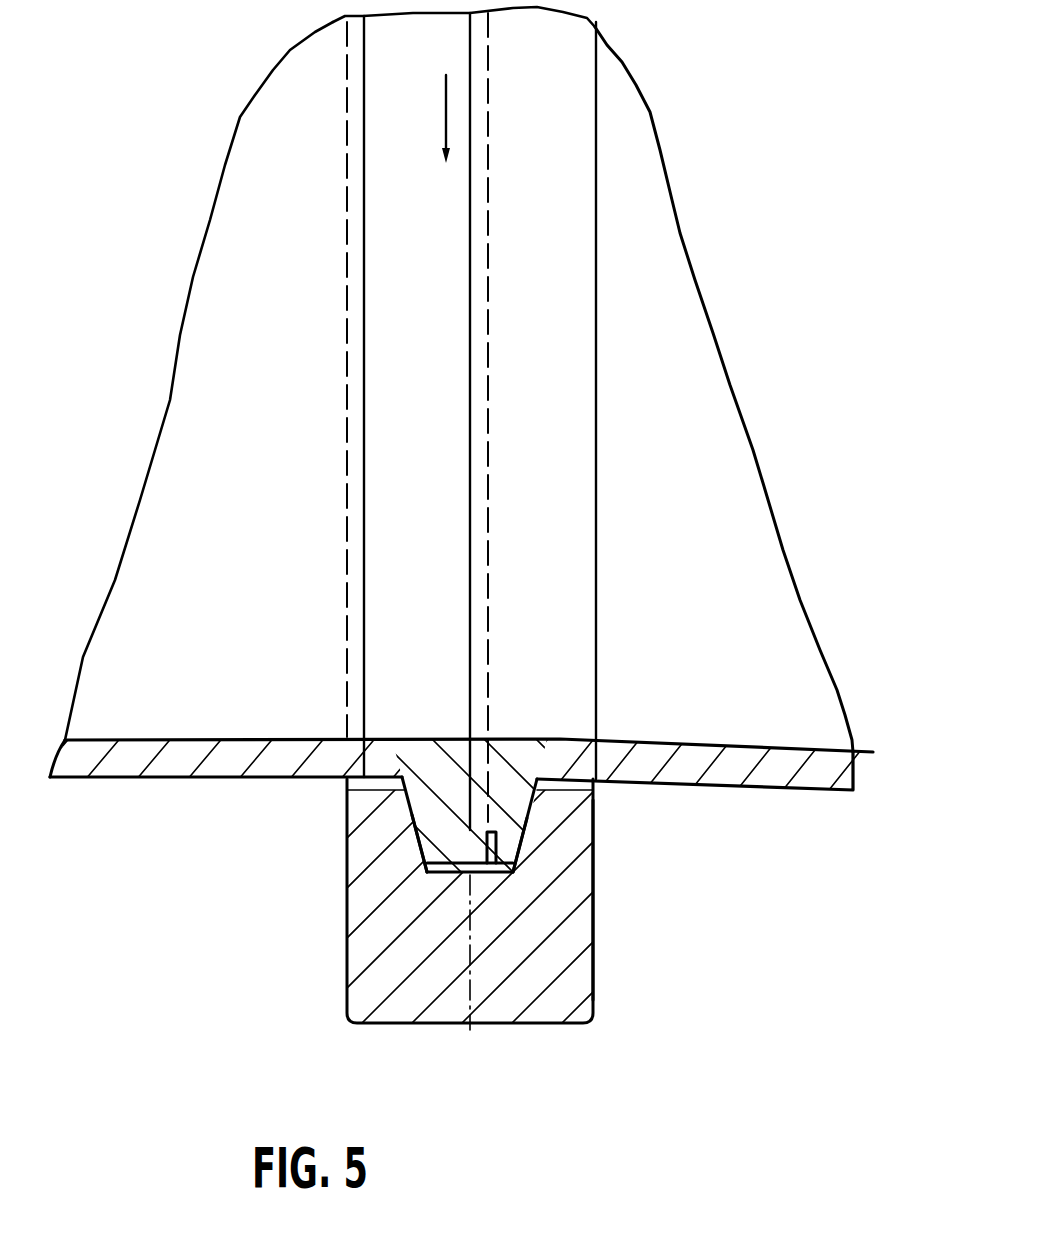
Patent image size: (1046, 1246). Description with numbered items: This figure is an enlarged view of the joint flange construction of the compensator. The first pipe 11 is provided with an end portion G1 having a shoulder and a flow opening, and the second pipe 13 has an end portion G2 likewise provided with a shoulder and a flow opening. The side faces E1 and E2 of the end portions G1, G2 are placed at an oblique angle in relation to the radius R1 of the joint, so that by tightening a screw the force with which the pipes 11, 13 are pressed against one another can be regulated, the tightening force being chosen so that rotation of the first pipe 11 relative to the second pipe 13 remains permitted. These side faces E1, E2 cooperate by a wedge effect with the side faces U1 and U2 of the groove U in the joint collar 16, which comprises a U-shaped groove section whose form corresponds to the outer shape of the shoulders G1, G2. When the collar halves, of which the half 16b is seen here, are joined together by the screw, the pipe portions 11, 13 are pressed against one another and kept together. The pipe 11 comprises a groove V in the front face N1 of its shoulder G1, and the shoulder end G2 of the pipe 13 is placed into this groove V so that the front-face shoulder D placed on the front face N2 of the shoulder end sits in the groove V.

The first pipe 11 is at (186, 368).
The second pipe 13 is at (700, 348).
The radius of the joint R1 is at (446, 114).
The end portion of the first pipe G1 is at (380, 412).
The front face of the shoulder N1 is at (484, 406).
The groove V is at (480, 467).
The end portion of the second pipe G2 is at (582, 588).
The side face of the groove U1 is at (422, 799).
The side face of the groove U2 is at (522, 799).
The groove U is at (395, 809).
The side face of the end portion E1 is at (395, 851).
The side face of the end portion E2 is at (544, 831).
The joint collar half 16b is at (592, 897).
The joint collar 16 is at (610, 962).
The front-face shoulder D is at (470, 832).
The front face of the shoulder end N2 is at (487, 838).